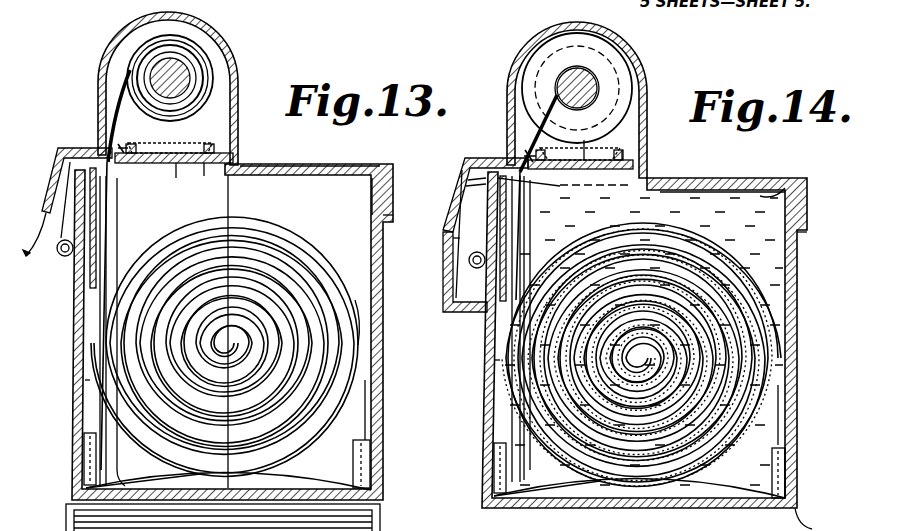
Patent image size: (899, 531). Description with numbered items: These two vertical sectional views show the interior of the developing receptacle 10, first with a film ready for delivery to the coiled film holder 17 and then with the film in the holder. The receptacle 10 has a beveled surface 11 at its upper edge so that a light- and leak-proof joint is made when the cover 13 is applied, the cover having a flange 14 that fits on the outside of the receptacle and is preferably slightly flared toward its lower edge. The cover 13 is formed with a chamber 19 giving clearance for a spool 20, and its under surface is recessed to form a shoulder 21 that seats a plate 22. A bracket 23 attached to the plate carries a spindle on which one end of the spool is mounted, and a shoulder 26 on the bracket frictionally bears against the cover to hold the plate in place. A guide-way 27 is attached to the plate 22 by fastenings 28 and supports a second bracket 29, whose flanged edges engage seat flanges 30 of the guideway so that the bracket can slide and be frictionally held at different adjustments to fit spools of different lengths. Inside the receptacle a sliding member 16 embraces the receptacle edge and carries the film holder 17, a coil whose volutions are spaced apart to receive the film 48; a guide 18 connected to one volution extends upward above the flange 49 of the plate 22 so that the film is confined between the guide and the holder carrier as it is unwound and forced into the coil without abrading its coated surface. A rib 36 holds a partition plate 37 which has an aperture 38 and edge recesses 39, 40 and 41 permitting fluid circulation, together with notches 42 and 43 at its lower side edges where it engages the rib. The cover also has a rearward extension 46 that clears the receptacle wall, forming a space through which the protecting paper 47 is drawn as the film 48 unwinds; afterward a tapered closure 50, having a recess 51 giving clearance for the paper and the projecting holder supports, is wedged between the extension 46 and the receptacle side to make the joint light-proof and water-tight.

In FIG. 13, the receptacle 10 is at (78, 292).
In FIG. 14, the receptacle 10 is at (490, 418).
In FIG. 13, the beveled surface 11 is at (372, 196).
In FIG. 13, the cover 13 is at (308, 165).
In FIG. 14, the cover 13 is at (712, 180).
In FIG. 13, the flange 14 is at (392, 210).
In FIG. 14, the flange 14 is at (800, 234).
In FIG. 13, the sliding member 16 is at (60, 254).
In FIG. 14, the sliding member 16 is at (495, 266).
In FIG. 13, the film holder 17 is at (358, 318).
In FIG. 14, the film holder 17 is at (762, 180).
In FIG. 13, the guide 18 is at (118, 243).
In FIG. 13, the chamber 19 is at (236, 78).
In FIG. 14, the chamber 19 is at (642, 96).
In FIG. 13, the spool 20 is at (178, 66).
In FIG. 14, the spool 20 is at (592, 80).
In FIG. 13, the shoulder 21 is at (236, 157).
In FIG. 14, the shoulder 21 is at (640, 166).
In FIG. 13, the plate 22 is at (205, 165).
In FIG. 14, the plate 22 is at (633, 156).
In FIG. 13, the bracket 23 is at (212, 138).
In FIG. 14, the bracket 23 is at (610, 146).
In FIG. 14, the shoulder 26 is at (452, 258).
In FIG. 13, the guide-way 27 is at (176, 165).
In FIG. 14, the guide-way 27 is at (585, 158).
In FIG. 14, the fastenings 28 is at (526, 224).
In FIG. 14, the bracket 29 is at (630, 188).
In FIG. 13, the seat flanges 30 is at (220, 150).
In FIG. 14, the seat flanges 30 is at (522, 160).
In FIG. 13, the rib 36 is at (90, 465).
In FIG. 14, the rib 36 is at (494, 485).
In FIG. 13, the plate 37 is at (122, 150).
In FIG. 14, the plate 37 is at (530, 160).
In FIG. 13, the aperture 38 is at (240, 328).
In FIG. 14, the aperture 38 is at (644, 338).
In FIG. 13, the recess 39 is at (82, 380).
In FIG. 14, the recess 39 is at (492, 360).
In FIG. 13, the recess 40 is at (372, 394).
In FIG. 14, the recess 40 is at (783, 395).
In FIG. 13, the recess 41 is at (306, 486).
In FIG. 14, the recess 41 is at (585, 500).
In FIG. 13, the notch 42 is at (86, 440).
In FIG. 14, the notch 42 is at (495, 458).
In FIG. 13, the notch 43 is at (381, 492).
In FIG. 14, the notch 43 is at (787, 462).
In FIG. 13, the rearward extension 46 is at (58, 152).
In FIG. 14, the rearward extension 46 is at (468, 182).
In FIG. 13, the paper 47 is at (46, 218).
In FIG. 13, the film 48 is at (97, 193).
In FIG. 14, the film 48 is at (508, 250).
In FIG. 13, the flange 49 is at (112, 170).
In FIG. 14, the flange 49 is at (535, 182).
In FIG. 14, the closure 50 is at (456, 238).
In FIG. 14, the recess 51 is at (468, 162).